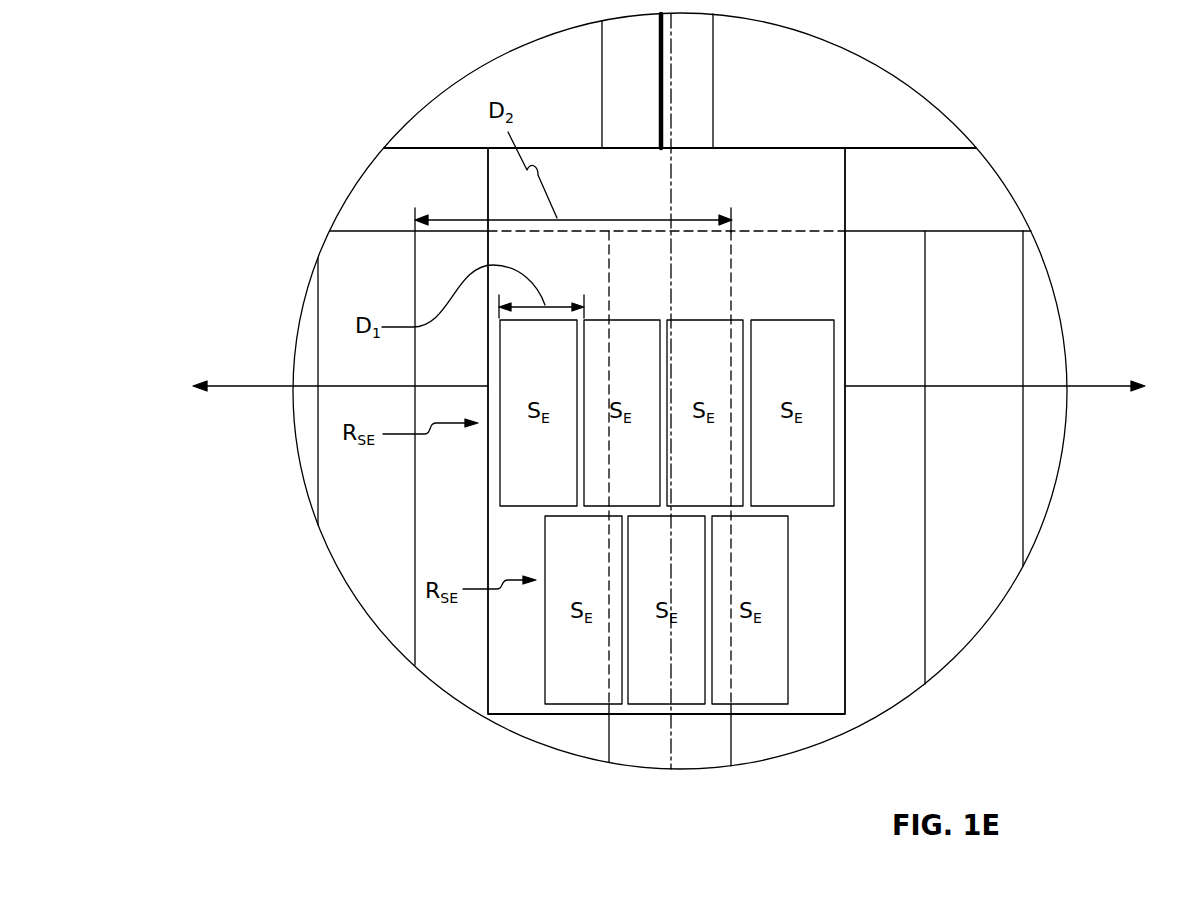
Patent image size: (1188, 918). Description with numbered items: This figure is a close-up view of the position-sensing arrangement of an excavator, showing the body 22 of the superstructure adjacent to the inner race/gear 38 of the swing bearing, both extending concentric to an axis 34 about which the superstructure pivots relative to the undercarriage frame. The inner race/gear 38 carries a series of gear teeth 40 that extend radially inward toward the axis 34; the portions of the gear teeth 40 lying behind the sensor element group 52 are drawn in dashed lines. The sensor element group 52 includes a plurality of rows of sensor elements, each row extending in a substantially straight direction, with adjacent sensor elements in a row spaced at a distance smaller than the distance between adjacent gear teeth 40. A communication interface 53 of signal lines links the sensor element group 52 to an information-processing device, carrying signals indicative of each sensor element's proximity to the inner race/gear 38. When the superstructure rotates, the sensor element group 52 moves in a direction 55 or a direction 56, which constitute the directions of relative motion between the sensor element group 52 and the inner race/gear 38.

The body 22 is at (812, 109).
The axis 34 is at (668, 52).
The inner race/gear 38 is at (972, 563).
The gear teeth 40 is at (375, 287).
The sensor element group 52 is at (847, 297).
The communication interface 53 is at (658, 52).
The direction 55 is at (1088, 387).
The direction 56 is at (257, 385).